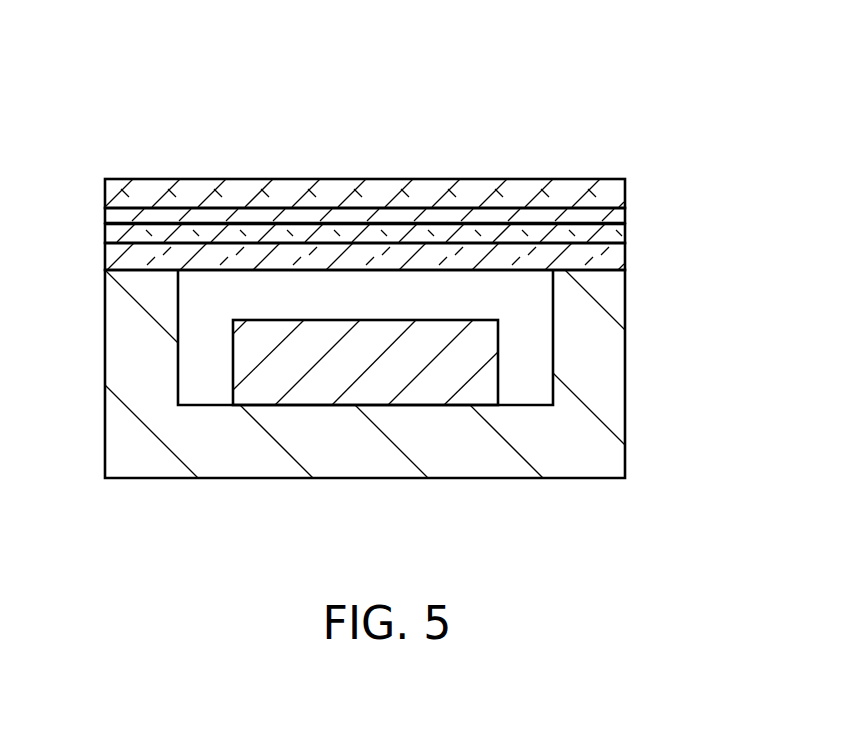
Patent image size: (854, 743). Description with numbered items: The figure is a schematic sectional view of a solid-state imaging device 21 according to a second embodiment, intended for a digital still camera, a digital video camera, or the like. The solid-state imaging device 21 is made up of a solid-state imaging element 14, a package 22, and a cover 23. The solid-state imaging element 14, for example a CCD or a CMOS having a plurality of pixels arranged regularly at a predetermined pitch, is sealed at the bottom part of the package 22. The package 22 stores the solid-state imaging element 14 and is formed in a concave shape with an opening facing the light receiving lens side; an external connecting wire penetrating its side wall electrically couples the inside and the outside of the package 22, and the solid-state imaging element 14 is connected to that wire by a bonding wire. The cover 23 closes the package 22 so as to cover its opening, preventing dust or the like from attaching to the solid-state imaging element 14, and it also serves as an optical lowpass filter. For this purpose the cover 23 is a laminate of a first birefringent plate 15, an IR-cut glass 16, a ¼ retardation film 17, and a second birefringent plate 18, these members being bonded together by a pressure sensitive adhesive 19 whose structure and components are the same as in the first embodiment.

The solid-state imaging element 14 is at (365, 393).
The first birefringent plate 15 is at (620, 191).
The IR-cut glass 16 is at (620, 215).
The ¼ retardation film 17 is at (620, 232).
The second birefringent plate 18 is at (620, 258).
The pressure sensitive adhesive 19 is at (105, 212).
The solid-state imaging device 21 is at (503, 143).
The package 22 is at (613, 375).
The cover 23 is at (694, 165).